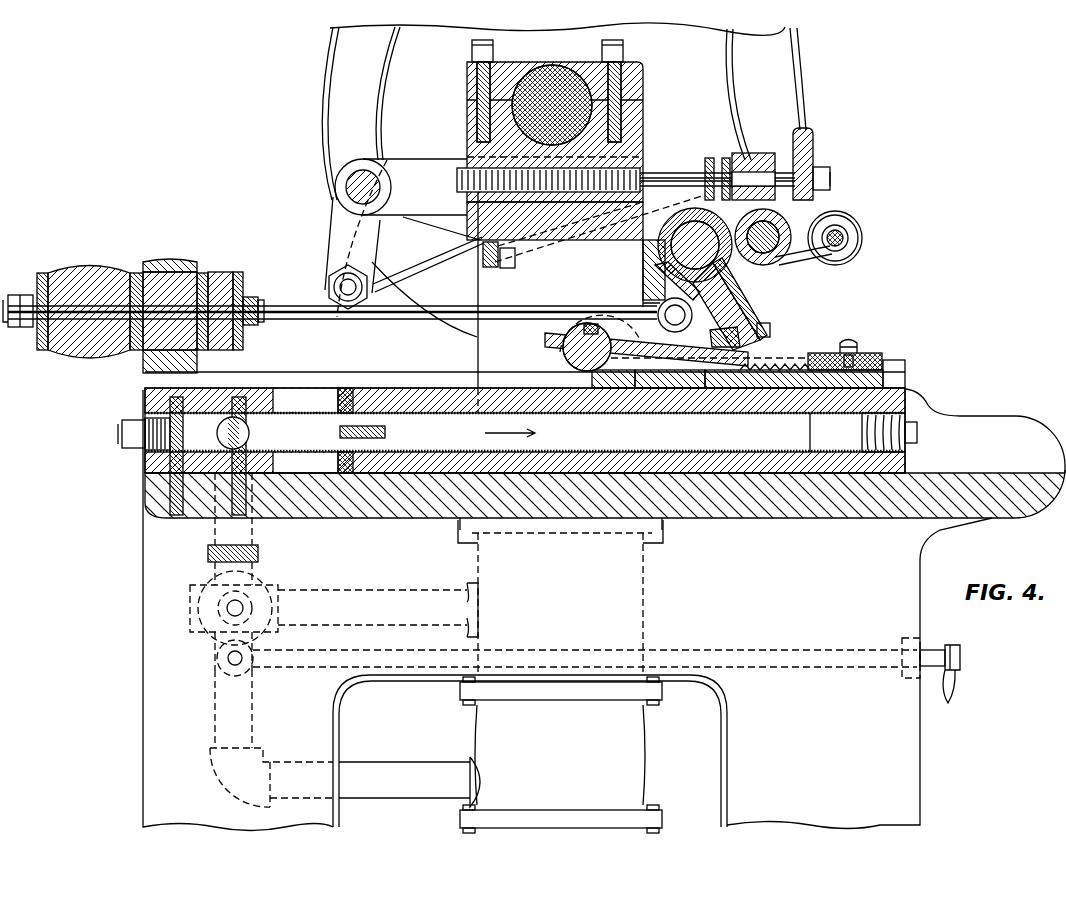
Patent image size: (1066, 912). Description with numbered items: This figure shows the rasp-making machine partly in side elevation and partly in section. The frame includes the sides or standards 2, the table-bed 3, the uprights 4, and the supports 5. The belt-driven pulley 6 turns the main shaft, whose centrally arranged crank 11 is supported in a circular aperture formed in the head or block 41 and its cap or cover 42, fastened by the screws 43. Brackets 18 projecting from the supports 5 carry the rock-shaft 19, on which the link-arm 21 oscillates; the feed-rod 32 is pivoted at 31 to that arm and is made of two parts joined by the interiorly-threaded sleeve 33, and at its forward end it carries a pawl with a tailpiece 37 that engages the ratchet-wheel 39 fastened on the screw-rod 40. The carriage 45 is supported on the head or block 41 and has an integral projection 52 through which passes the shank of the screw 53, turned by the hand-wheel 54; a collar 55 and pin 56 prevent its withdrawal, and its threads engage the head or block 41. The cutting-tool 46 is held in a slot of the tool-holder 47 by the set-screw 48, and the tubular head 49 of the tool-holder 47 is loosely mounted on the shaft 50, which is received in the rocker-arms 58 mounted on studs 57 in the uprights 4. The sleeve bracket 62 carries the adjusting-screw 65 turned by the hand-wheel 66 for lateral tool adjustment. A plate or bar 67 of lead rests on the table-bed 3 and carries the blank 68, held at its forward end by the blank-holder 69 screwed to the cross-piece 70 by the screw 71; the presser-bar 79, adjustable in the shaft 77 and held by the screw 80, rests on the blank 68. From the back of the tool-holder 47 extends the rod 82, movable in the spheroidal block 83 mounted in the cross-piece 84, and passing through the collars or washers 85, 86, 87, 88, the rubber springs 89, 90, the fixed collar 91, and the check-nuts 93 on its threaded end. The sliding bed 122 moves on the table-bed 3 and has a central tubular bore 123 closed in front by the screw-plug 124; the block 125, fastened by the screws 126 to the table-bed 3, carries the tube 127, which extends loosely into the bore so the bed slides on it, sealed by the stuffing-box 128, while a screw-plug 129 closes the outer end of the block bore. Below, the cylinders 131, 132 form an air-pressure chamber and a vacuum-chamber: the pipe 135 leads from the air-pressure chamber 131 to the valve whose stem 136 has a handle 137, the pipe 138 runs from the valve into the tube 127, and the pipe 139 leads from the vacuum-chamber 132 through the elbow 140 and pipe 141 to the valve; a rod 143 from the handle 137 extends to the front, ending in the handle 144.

The sides or standards 2 is at (340, 731).
The table-bed 3 is at (732, 521).
The uprights 4 is at (1030, 430).
The supports 5 is at (478, 354).
The pulley 6 is at (322, 112).
The crank 11 is at (612, 96).
The brackets 18 is at (423, 172).
The rock-shaft 19 is at (346, 187).
The link-arm 21 is at (336, 226).
The pivot 31 is at (334, 288).
The feed-rod 32 is at (428, 282).
The interiorly-threaded sleeve 33 is at (600, 232).
The tailpiece 37 is at (493, 266).
The ratchet-wheel 39 is at (772, 262).
The screw-rod 40 is at (745, 255).
The head or block 41 is at (468, 106).
The cap or cover 42 is at (468, 80).
The screws 43 is at (472, 49).
The carriage 45 is at (467, 232).
The cutting-tool 46 is at (742, 316).
The tool-holder 47 is at (736, 300).
The set-screw 48 is at (770, 330).
The tubular head 49 is at (643, 274).
The shaft 50 is at (660, 248).
The projection 52 is at (748, 158).
The screw 53 is at (457, 178).
The hand-wheel 54 is at (813, 155).
The collar 55 is at (708, 158).
The pin 56 is at (726, 158).
The studs 57 is at (645, 414).
The rocker-arms 58 is at (643, 294).
The bracket 62 is at (812, 248).
The adjusting-screw 65 is at (850, 238).
The hand-wheel 66 is at (862, 224).
The plate or bar of lead 67 is at (586, 402).
The blank 68 is at (708, 414).
The blank-holder 69 is at (870, 358).
The cross-piece 70 is at (897, 376).
The screw 71 is at (850, 349).
The shaft 77 is at (576, 354).
The presser-bar 79 is at (638, 348).
The screw 80 is at (584, 329).
The rod 82 is at (375, 314).
The block 83 is at (166, 272).
The cross-piece 84 is at (192, 264).
The collar or washer 85 is at (40, 273).
The collar or washer 86 is at (135, 271).
The collar or washer 87 is at (205, 273).
The collar or washer 88 is at (246, 336).
The rubber block or spring 89 is at (95, 352).
The rubber block or spring 90 is at (236, 272).
The fixed collar 91 is at (256, 320).
The check-nut 93 is at (26, 350).
The sliding bed 122 is at (908, 460).
The central tubular bore 123 is at (834, 437).
The screw-plug 124 is at (917, 432).
The block 125 is at (145, 460).
The screws 126 is at (215, 504).
The tube 127 is at (440, 416).
The stuffing-box 128 is at (338, 463).
The screw-plug 129 is at (122, 434).
The cylinder (air-pressure chamber) 131 is at (640, 594).
The cylinder (vacuum-chamber) 132 is at (640, 763).
The pipe 135 is at (330, 590).
The valve stem or plug 136 is at (238, 606).
The handle 137 is at (230, 648).
The pipe 138 is at (215, 527).
The pipe 139 is at (372, 764).
The elbow 140 is at (263, 760).
The pipe 141 is at (245, 702).
The rod 143 is at (798, 664).
The handle 144 is at (955, 688).